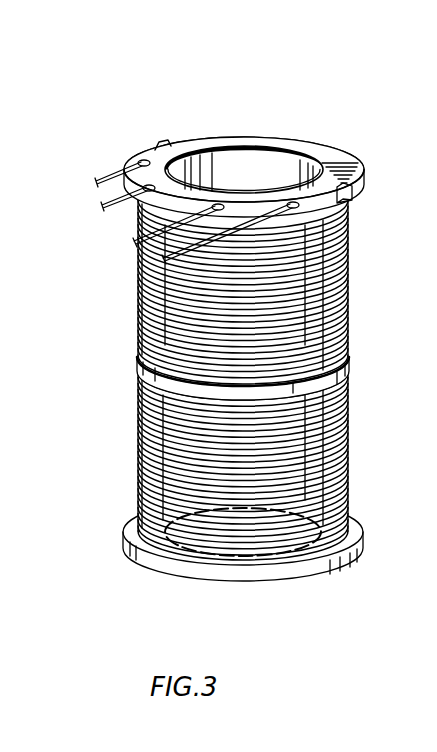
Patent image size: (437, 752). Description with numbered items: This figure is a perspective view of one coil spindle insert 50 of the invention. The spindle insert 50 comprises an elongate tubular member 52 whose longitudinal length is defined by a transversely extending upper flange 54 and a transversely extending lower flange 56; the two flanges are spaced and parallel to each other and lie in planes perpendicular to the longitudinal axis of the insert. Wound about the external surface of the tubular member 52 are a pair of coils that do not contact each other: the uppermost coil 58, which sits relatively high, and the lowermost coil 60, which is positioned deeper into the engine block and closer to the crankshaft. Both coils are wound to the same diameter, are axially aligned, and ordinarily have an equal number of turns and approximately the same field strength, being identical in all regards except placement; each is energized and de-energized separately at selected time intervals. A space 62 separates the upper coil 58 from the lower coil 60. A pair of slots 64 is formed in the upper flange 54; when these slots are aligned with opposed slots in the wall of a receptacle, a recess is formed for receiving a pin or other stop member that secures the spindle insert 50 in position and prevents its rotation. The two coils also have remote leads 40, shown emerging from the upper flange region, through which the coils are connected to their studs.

The coil spindle insert 50 is at (285, 100).
The elongate tubular member 52 is at (283, 160).
The upper flange 54 is at (206, 141).
The lower flange 56 is at (273, 575).
The uppermost coil 58 is at (352, 288).
The lowermost coil 60 is at (136, 460).
The space 62 is at (137, 377).
The slots 64 is at (158, 146).
The leads 40 is at (110, 175).